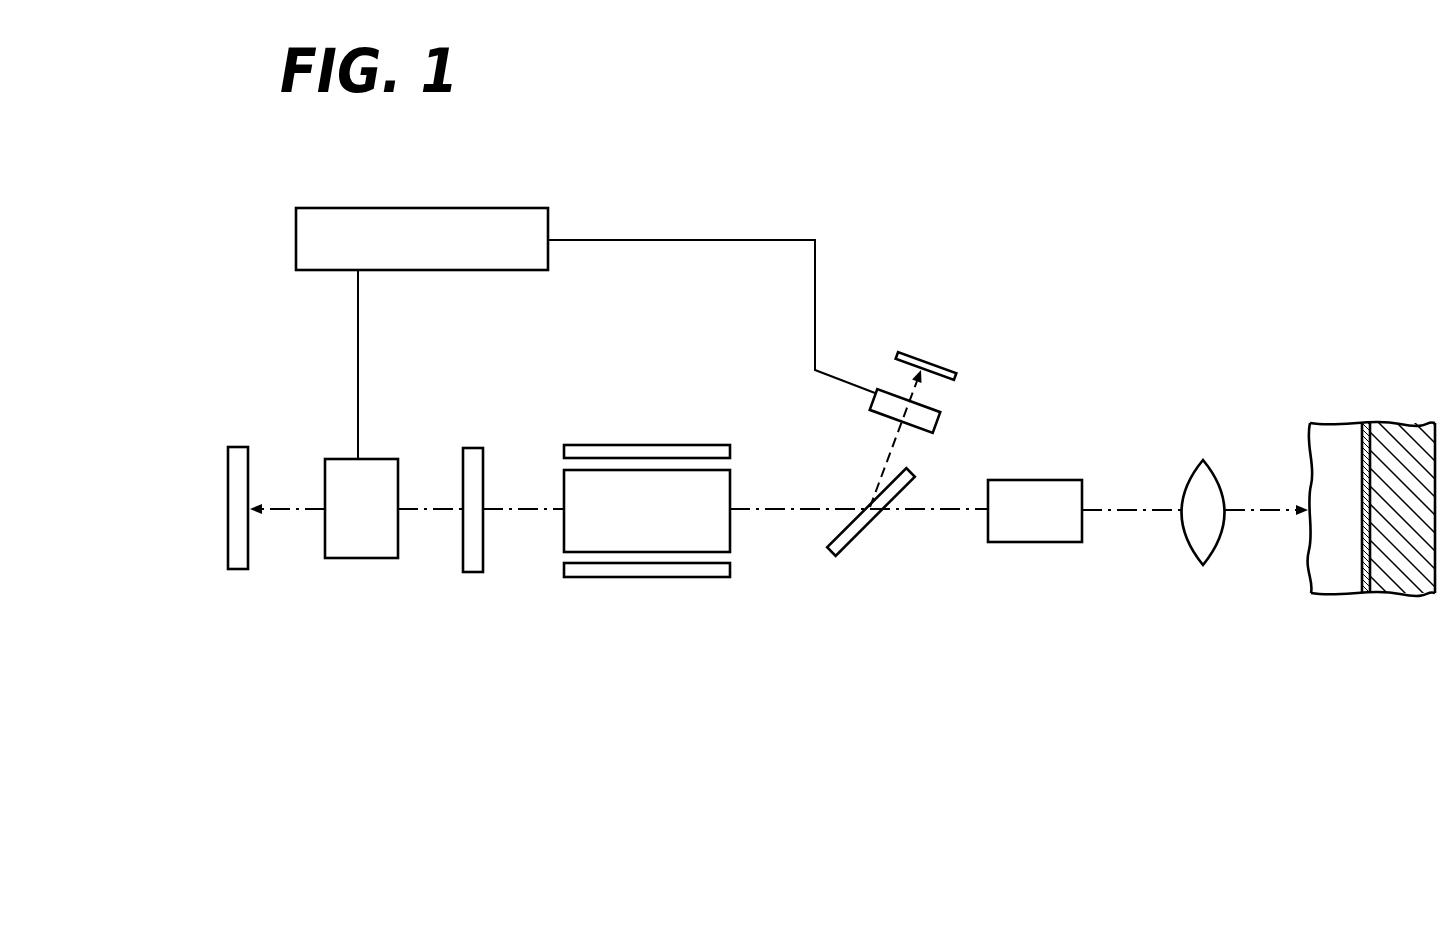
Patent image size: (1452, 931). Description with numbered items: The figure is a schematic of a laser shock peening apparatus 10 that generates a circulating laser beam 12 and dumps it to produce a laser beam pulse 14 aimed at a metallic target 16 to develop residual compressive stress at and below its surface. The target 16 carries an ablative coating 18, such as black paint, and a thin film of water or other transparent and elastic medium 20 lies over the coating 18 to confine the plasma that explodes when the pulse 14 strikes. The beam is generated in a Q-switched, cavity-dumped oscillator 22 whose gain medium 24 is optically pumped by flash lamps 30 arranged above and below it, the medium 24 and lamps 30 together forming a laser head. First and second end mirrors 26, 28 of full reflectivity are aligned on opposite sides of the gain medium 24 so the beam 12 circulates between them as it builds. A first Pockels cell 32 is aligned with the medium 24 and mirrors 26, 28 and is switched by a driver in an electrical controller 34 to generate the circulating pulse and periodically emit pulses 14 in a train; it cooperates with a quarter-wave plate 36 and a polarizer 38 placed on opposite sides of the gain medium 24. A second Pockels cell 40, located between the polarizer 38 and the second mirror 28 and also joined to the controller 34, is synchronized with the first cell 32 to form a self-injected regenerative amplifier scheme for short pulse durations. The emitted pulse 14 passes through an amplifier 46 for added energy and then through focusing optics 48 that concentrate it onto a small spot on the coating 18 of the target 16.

The laser shock peening apparatus 10 is at (1162, 302).
The circulating laser beam 12 is at (890, 447).
The laser beam pulse 14 is at (1250, 513).
The target 16 is at (1397, 425).
The ablative coating 18 is at (1365, 423).
The transparent and elastic medium 20 is at (1355, 478).
The oscillator 22 is at (618, 483).
The gain medium 24 is at (570, 532).
The first end mirror 26 is at (228, 465).
The second end mirror 28 is at (948, 368).
The flash lamps 30 is at (632, 450).
The first Pockels cell 32 is at (362, 548).
The electrical controller 34 is at (296, 240).
The quarter-wave plate 36 is at (473, 448).
The polarizer 38 is at (845, 548).
The second Pockels cell 40 is at (940, 420).
The amplifier 46 is at (1045, 542).
The optics 48 is at (1196, 483).